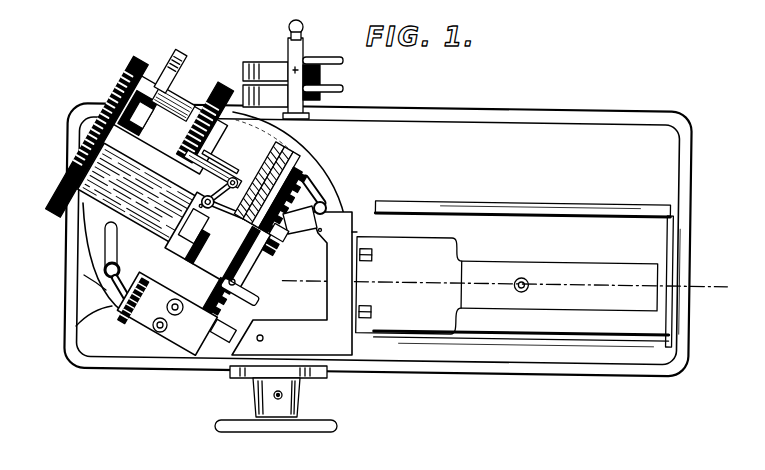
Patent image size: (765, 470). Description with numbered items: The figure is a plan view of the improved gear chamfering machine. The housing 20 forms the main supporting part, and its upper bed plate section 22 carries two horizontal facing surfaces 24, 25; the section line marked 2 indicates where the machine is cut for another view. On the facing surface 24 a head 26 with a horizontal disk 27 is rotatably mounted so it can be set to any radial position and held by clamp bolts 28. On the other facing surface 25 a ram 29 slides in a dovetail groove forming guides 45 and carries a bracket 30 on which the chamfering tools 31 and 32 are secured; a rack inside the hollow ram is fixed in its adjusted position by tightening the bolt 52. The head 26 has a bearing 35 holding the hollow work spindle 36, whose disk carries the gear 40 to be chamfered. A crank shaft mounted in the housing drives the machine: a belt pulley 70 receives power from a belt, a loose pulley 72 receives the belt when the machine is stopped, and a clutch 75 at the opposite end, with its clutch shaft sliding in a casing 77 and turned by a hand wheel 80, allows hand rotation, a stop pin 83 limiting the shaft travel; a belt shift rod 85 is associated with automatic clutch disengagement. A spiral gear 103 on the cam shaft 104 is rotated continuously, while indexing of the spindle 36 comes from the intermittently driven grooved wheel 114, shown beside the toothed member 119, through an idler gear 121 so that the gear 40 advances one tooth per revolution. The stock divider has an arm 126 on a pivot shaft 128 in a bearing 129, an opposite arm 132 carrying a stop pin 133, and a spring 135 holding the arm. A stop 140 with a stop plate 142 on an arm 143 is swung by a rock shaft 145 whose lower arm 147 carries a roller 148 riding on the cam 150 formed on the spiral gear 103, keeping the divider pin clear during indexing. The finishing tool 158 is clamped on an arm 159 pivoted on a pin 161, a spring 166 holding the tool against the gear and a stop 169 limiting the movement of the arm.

The section line 2- 2 is at (66, 150).
The housing 20 is at (527, 111).
The bed plate section 22 is at (688, 170).
The facing surface 24 is at (100, 312).
The facing surface 25 is at (662, 270).
The head 26 is at (107, 306).
The horizontal disk 27 is at (337, 182).
The clamp bolts 28 is at (327, 206).
The ram 29 is at (567, 300).
The bracket 30 is at (337, 345).
The chamfering tool 31 is at (298, 214).
The chamfering tool 32 is at (228, 332).
The bearing 35 is at (105, 272).
The work spindle 36 is at (86, 222).
The gear 40 is at (311, 158).
The guides 45 is at (670, 304).
The bolt 52 is at (522, 290).
The belt pulley 70 is at (262, 62).
The loose pulley 72 is at (243, 97).
The clutch 75 is at (265, 421).
The casing 77 is at (300, 405).
The hand wheel 80 is at (334, 428).
The stop pin 83 is at (283, 394).
The belt shift rod 85 is at (303, 57).
The spiral gear 103 is at (270, 156).
The cam shaft 104 is at (226, 180).
The grooved wheel 114 is at (176, 50).
The rack bar 119 is at (146, 62).
The idler gear 121 is at (222, 91).
The arm 126 is at (250, 294).
The pivot shaft 128 is at (222, 306).
The bearing 129 is at (236, 281).
The arm 132 is at (262, 266).
The stop pin 133 is at (262, 252).
The spring 135 is at (170, 273).
The stop 140 is at (283, 181).
The stop plate 142 is at (266, 230).
The arm 143 is at (218, 241).
The rock shaft 145 is at (208, 190).
The arm 147 is at (232, 179).
The roller 148 is at (246, 160).
The cam 150 is at (258, 158).
The finishing tool 158 is at (200, 333).
The arm 159 is at (172, 340).
The pin 161 is at (175, 299).
The spring 166 is at (106, 308).
The stop 169 is at (143, 315).